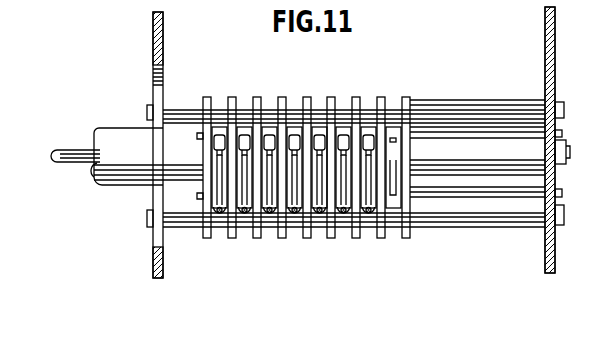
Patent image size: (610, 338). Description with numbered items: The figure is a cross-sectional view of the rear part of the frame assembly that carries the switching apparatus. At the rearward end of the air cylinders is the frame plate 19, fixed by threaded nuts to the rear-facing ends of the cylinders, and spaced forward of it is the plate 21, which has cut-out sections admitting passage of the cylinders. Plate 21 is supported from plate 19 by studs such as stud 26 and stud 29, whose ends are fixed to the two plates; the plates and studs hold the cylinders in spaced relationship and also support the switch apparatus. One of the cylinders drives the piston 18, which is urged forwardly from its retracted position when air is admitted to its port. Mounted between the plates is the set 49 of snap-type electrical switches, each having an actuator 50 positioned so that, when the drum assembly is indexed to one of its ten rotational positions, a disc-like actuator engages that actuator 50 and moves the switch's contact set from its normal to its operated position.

The piston 18 is at (118, 133).
The frame plate 19 is at (555, 68).
The plate 21 is at (164, 243).
The stud 26 is at (482, 222).
The stud 29 is at (452, 101).
The set of snap type electrical switches 49 is at (193, 96).
The actuator 50 is at (375, 154).